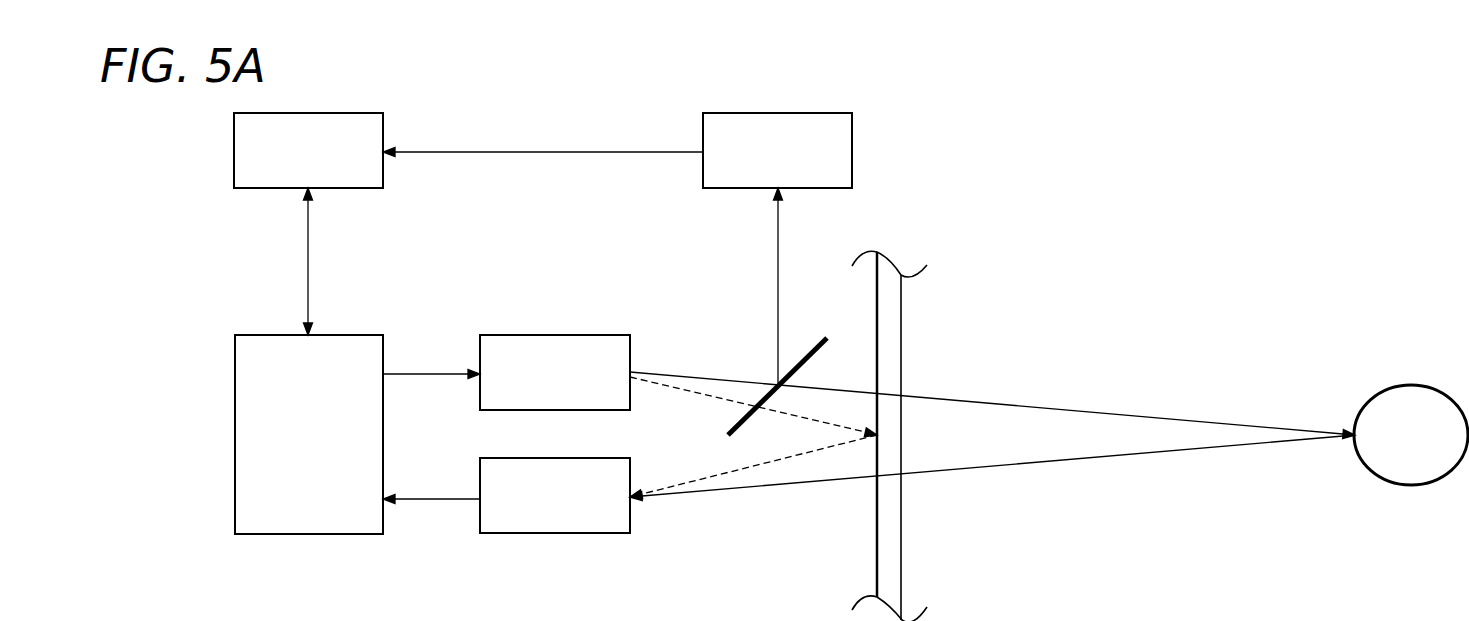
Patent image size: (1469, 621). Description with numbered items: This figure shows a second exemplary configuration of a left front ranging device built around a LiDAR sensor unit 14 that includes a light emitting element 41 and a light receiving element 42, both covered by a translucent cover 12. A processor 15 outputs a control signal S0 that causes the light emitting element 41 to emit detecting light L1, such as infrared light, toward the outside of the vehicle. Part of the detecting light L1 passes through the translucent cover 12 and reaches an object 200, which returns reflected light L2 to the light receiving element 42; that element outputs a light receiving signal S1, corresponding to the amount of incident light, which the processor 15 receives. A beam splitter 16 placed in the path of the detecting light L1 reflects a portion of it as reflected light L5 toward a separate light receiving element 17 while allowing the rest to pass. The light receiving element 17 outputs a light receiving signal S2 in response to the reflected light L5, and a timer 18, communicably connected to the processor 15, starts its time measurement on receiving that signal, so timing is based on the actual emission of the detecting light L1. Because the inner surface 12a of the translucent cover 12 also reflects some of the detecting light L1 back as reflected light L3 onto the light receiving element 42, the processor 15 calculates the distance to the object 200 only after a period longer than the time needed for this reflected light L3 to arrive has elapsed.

The translucent cover 12 is at (887, 436).
The inner surface 12a is at (875, 532).
The LiDAR sensor unit 14 is at (503, 294).
The processor 15 is at (320, 535).
The beam splitter 16 is at (810, 345).
The light receiving element 17 is at (807, 113).
The timer 18 is at (347, 112).
The light emitting element 41 is at (595, 334).
The light receiving element 42 is at (590, 535).
The object 200 is at (1412, 397).
The control signal S0 is at (420, 372).
The light receiving signal S1 is at (438, 500).
The light receiving signal S2 is at (558, 153).
The detecting light L1 is at (988, 402).
The reflected light L2 is at (975, 470).
The reflected light L3 is at (757, 467).
The reflected light L5 is at (778, 290).